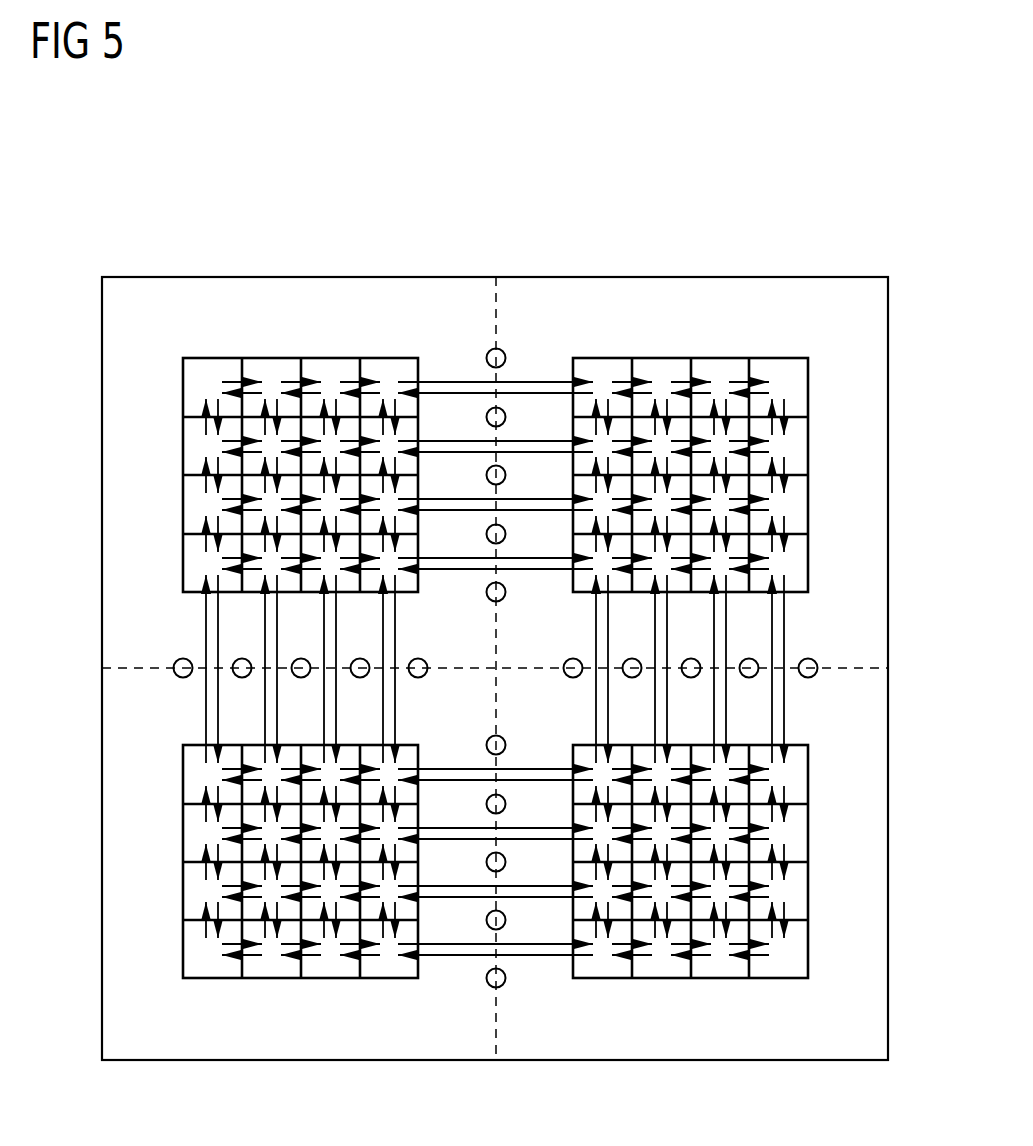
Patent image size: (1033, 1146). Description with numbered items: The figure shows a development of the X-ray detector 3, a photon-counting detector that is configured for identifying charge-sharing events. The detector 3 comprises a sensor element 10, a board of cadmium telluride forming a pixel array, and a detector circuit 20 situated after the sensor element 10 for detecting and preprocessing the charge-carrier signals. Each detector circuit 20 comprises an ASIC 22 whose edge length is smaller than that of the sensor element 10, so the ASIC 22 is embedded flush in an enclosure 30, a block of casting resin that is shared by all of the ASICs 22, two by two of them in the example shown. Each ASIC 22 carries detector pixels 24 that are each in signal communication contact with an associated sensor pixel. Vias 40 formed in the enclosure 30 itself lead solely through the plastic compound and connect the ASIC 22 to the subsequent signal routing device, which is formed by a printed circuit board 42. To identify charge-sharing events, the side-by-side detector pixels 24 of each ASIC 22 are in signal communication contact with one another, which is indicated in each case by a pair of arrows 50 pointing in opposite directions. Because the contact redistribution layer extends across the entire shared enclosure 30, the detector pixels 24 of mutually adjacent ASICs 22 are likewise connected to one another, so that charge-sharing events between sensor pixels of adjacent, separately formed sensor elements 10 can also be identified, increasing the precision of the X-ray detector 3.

The X-ray detector 3 is at (781, 161).
The sensor element 10 is at (145, 277).
The detector circuit 20 is at (494, 653).
The ASIC 22 is at (336, 358).
The detector pixel 24 is at (272, 366).
The enclosure 30 is at (118, 338).
The via 40 is at (179, 659).
The printed circuit board 42 is at (478, 277).
The arrows 50 is at (232, 380).